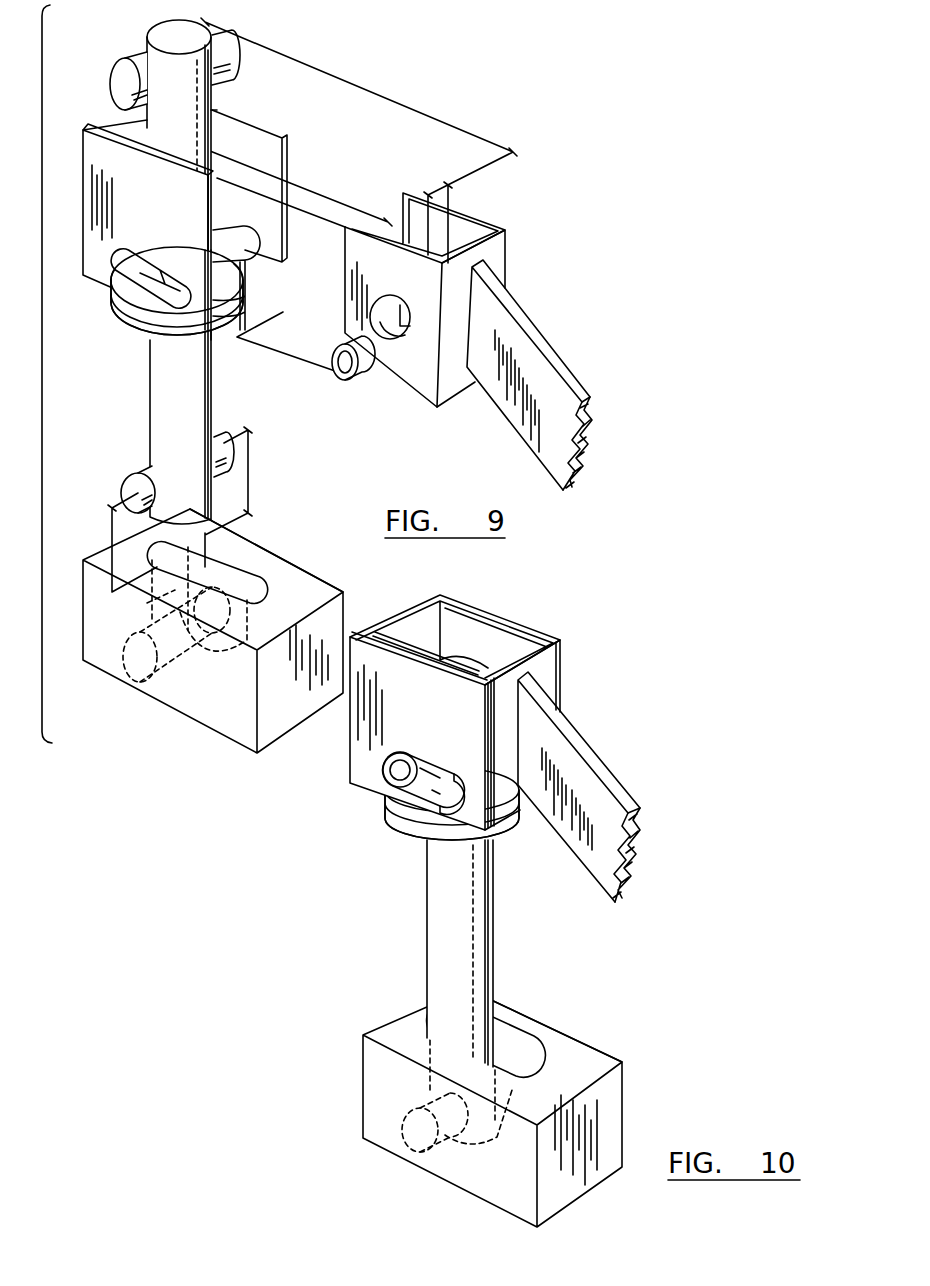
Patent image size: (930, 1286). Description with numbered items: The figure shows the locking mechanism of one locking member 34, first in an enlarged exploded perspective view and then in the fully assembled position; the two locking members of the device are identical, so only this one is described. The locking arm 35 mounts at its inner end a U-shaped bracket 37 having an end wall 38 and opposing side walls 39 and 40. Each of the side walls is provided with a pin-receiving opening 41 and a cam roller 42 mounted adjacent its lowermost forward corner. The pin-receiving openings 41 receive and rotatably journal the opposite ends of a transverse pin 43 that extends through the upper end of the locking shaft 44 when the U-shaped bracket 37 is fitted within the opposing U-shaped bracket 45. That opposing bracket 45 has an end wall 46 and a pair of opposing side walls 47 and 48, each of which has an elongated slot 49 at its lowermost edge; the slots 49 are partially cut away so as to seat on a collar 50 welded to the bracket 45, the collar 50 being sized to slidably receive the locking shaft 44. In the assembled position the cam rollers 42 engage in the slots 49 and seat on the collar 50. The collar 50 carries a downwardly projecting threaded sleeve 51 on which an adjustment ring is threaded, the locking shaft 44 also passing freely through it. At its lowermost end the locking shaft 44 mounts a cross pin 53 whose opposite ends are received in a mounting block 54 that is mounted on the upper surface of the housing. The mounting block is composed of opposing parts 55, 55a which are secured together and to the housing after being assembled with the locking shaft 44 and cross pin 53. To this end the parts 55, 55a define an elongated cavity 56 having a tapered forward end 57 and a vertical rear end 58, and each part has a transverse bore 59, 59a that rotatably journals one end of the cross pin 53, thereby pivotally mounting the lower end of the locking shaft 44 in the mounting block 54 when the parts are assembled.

In FIG. 9, the locking member 34 is at (332, 41).
In FIG. 10, the locking member 34 is at (537, 609).
In FIG. 9, the locking arm 35 is at (545, 338).
In FIG. 10, the locking arm 35 is at (568, 770).
In FIG. 9, the U-shaped bracket 37 is at (445, 308).
In FIG. 10, the U-shaped bracket 37 is at (455, 716).
In FIG. 9, the end wall 38 is at (500, 263).
In FIG. 10, the end wall 38 is at (545, 668).
In FIG. 9, the side wall 39 is at (386, 274).
In FIG. 10, the side wall 39 is at (407, 642).
In FIG. 9, the side wall 40 is at (478, 245).
In FIG. 10, the side wall 40 is at (478, 647).
In FIG. 9, the pin-receiving opening 41 is at (390, 342).
In FIG. 9, the cam roller 42 is at (367, 376).
In FIG. 10, the cam roller 42 is at (386, 788).
In FIG. 9, the transverse pin 43 is at (145, 62).
In FIG. 9, the locking shaft 44 is at (205, 102).
In FIG. 10, the locking shaft 44 is at (485, 918).
In FIG. 9, the opposing U-shaped bracket 45 is at (131, 192).
In FIG. 10, the opposing U-shaped bracket 45 is at (343, 732).
In FIG. 9, the end wall 46 is at (92, 124).
In FIG. 10, the end wall 46 is at (397, 616).
In FIG. 9, the side wall 47 is at (148, 194).
In FIG. 10, the side wall 47 is at (418, 704).
In FIG. 9, the side wall 48 is at (262, 130).
In FIG. 9, the elongated slot 49 is at (243, 225).
In FIG. 10, the elongated slot 49 is at (442, 767).
In FIG. 9, the collar 50 is at (146, 305).
In FIG. 10, the collar 50 is at (403, 803).
In FIG. 9, the threaded sleeve 51 is at (127, 322).
In FIG. 9, the cross pin 53 is at (148, 468).
In FIG. 10, the cross pin 53 is at (415, 1157).
In FIG. 9, the mounting block 54 is at (217, 648).
In FIG. 10, the mounting block 54 is at (485, 1102).
In FIG. 9, the mounting block part 55 is at (212, 717).
In FIG. 10, the mounting block part 55 is at (483, 1187).
In FIG. 9, the mounting block part 55a is at (310, 588).
In FIG. 10, the mounting block part 55a is at (593, 1045).
In FIG. 9, the elongated cavity 56 is at (200, 555).
In FIG. 10, the elongated cavity 56 is at (510, 1033).
In FIG. 9, the tapered forward end 57 is at (243, 603).
In FIG. 10, the tapered forward end 57 is at (503, 1093).
In FIG. 9, the vertical rear end 58 is at (147, 603).
In FIG. 10, the vertical rear end 58 is at (545, 1082).
In FIG. 9, the transverse bore 59 is at (138, 656).
In FIG. 10, the transverse bore 59 is at (448, 1096).
In FIG. 9, the transverse bore 59a is at (237, 583).